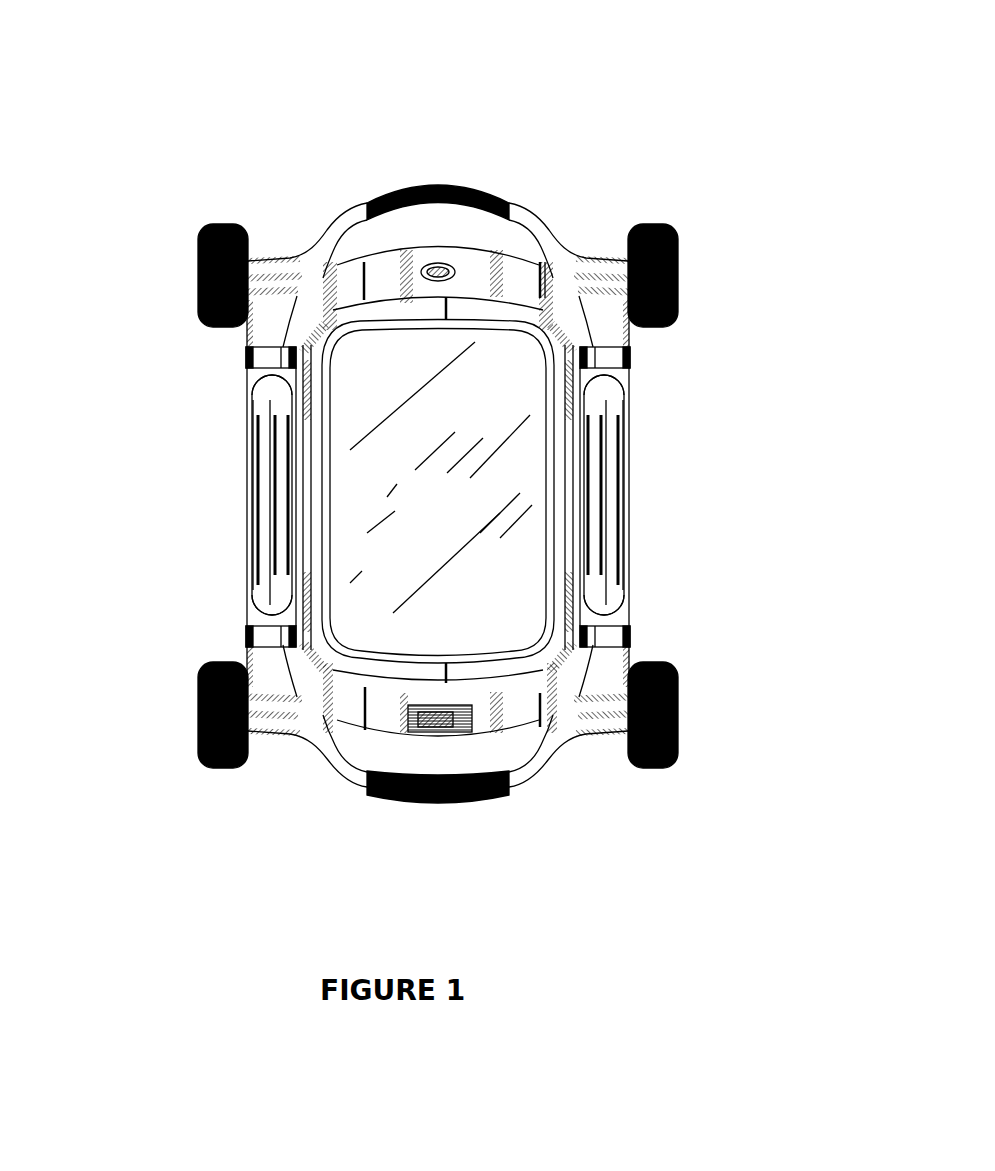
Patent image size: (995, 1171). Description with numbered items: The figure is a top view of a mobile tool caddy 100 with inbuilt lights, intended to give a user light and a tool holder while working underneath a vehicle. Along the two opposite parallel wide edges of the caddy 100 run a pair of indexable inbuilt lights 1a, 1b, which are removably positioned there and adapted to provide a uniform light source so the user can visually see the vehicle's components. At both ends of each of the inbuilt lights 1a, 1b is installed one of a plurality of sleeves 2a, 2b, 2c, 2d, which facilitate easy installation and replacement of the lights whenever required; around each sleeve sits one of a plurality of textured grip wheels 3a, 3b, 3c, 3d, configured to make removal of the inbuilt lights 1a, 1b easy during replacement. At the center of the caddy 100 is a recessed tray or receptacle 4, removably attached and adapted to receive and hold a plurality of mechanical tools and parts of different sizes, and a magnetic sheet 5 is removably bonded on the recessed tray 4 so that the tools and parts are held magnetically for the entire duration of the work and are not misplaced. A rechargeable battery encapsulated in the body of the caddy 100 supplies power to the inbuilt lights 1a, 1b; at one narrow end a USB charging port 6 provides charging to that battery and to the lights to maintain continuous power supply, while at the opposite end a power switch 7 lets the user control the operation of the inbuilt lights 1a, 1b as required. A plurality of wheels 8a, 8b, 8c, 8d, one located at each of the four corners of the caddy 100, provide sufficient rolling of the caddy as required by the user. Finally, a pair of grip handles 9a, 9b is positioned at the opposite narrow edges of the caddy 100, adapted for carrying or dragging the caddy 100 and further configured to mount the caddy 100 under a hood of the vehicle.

The mobile tool caddy 100 is at (587, 137).
The indexable inbuilt light 1a is at (626, 394).
The indexable inbuilt light 1b is at (254, 566).
The sleeve 2a is at (586, 409).
The sleeve 2b is at (630, 611).
The sleeve 2c is at (253, 400).
The sleeve 2d is at (260, 602).
The textured grip wheel 3a is at (612, 357).
The textured grip wheel 3b is at (613, 636).
The textured grip wheel 3c is at (263, 363).
The textured grip wheel 3d is at (265, 633).
The recessed tray 4 is at (460, 500).
The magnetic sheet 5 is at (487, 568).
The USB charging port 6 is at (435, 248).
The power switch 7 is at (469, 724).
The wheel 8a is at (700, 235).
The wheel 8b is at (691, 715).
The wheel 8c is at (212, 219).
The wheel 8d is at (179, 722).
The grip handle 9a is at (431, 181).
The grip handle 9b is at (444, 803).